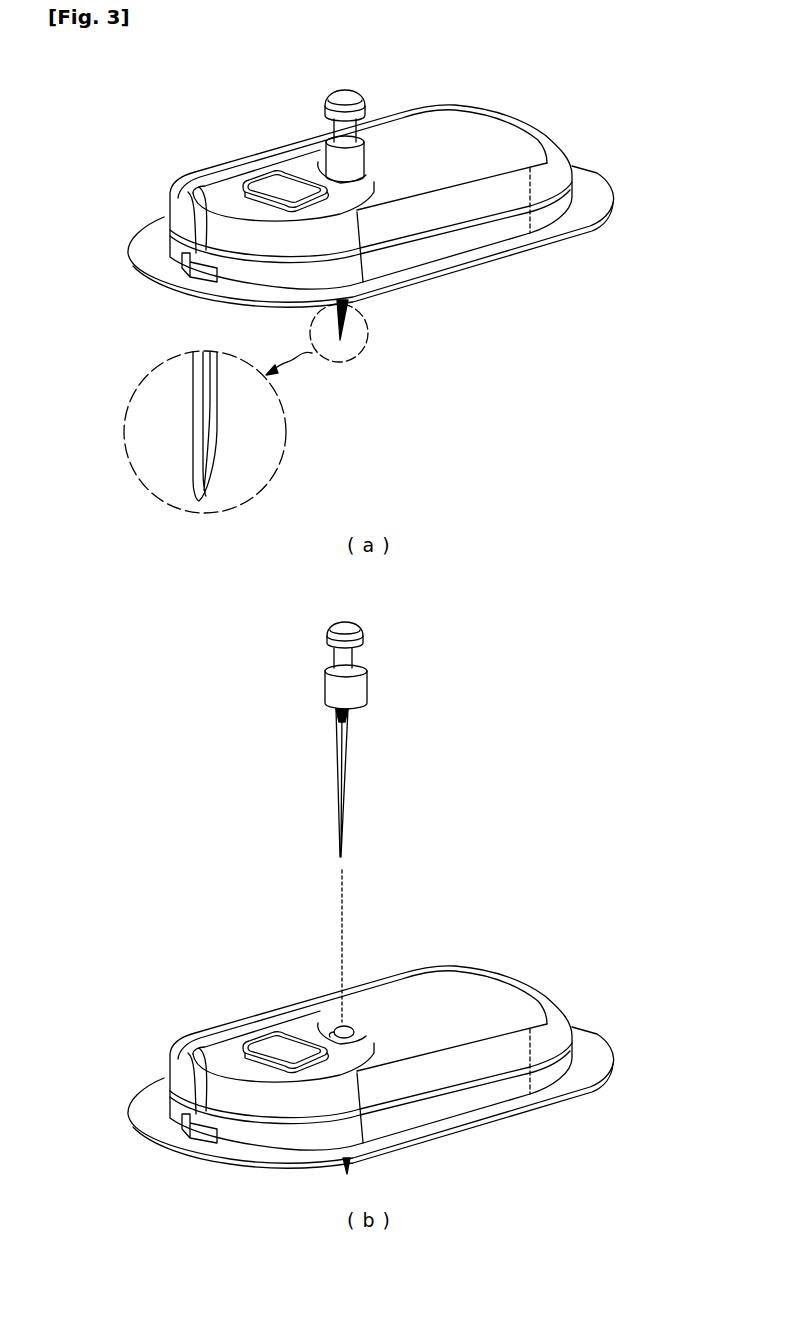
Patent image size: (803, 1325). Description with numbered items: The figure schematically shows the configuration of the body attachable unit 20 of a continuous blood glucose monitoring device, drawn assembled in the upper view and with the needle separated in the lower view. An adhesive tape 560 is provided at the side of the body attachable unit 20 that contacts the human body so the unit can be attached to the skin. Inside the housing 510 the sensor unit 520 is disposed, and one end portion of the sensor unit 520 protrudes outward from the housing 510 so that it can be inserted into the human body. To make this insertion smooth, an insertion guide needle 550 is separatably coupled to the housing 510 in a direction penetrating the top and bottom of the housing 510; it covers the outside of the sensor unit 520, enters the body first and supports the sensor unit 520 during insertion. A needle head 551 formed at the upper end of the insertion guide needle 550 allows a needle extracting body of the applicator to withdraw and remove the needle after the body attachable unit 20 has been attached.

The body attachable unit 20 is at (565, 103).
The housing 510 is at (512, 188).
The sensor unit 520 is at (203, 378).
The insertion guide needle 550 is at (198, 415).
The needle head 551 is at (347, 660).
The adhesive tape 560 is at (612, 206).